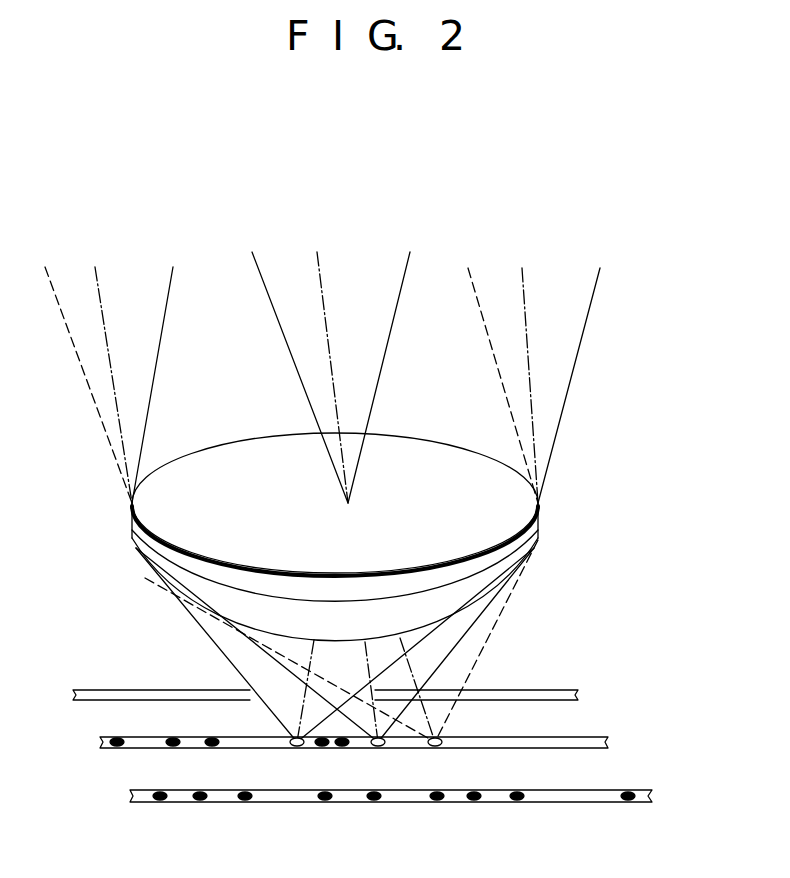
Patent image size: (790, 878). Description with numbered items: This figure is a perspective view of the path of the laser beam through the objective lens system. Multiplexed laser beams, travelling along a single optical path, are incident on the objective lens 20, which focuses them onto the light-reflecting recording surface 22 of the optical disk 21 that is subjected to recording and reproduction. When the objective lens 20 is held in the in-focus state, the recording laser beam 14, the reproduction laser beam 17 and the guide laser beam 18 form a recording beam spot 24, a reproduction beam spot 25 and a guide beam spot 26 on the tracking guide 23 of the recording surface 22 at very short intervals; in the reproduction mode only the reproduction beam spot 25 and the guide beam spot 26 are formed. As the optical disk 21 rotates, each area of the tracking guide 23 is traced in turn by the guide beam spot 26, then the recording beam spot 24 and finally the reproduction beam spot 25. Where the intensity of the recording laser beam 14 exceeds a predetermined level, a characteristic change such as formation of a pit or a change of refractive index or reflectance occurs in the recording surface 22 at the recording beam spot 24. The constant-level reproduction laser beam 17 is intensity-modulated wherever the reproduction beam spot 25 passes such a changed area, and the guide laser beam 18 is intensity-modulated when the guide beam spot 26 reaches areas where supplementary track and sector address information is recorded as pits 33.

The recording laser beam 14 is at (100, 292).
The guide laser beam 18 is at (92, 399).
The reproduction laser beam 17 is at (203, 628).
The objective lens 20 is at (537, 530).
The optical disk 21 is at (522, 627).
The recording surface 22 is at (527, 712).
The tracking guide 23 is at (570, 690).
The recording beam spot 24 is at (378, 748).
The reproduction beam spot 25 is at (297, 748).
The guide beam spot 26 is at (436, 748).
The pits 33 is at (160, 788).